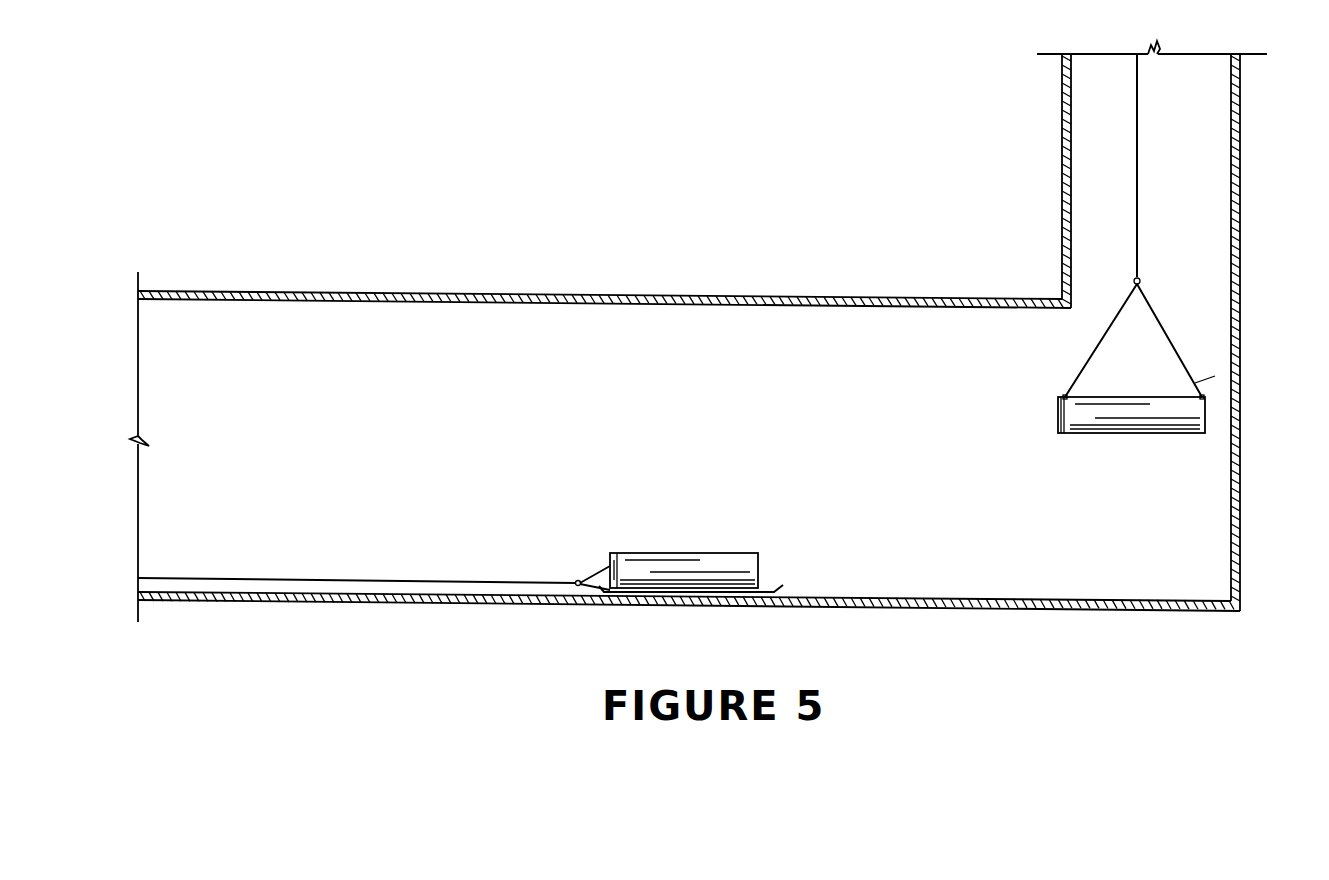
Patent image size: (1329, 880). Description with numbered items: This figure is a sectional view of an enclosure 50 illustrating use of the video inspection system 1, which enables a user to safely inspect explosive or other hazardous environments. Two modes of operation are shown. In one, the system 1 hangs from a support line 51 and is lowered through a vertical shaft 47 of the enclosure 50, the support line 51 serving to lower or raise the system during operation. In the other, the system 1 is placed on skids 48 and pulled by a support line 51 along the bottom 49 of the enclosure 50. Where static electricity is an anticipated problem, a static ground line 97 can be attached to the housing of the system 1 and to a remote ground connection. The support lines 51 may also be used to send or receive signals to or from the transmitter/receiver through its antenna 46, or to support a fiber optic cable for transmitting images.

The video inspection system 1 is at (1140, 448).
The antenna 46 is at (1174, 397).
The shaft 47 is at (1176, 227).
The skids 48 is at (775, 589).
The bottom 49 is at (891, 598).
The enclosure 50 is at (1240, 463).
The support lines 51 is at (1138, 136).
The static ground line 97 is at (597, 570).